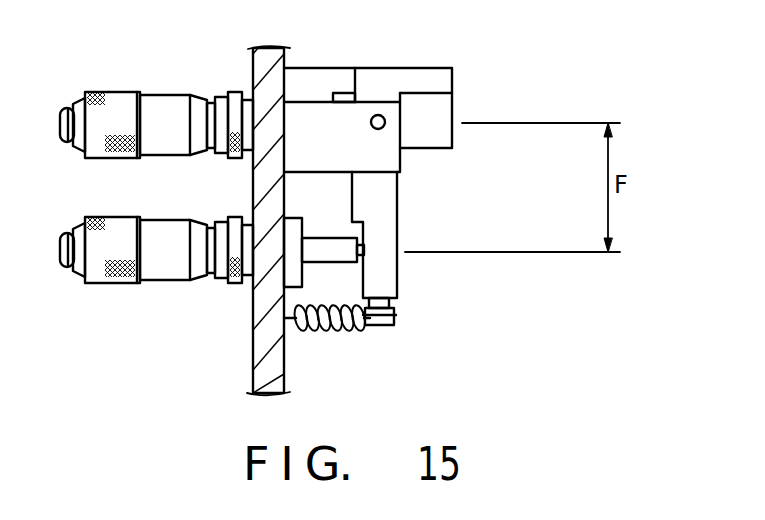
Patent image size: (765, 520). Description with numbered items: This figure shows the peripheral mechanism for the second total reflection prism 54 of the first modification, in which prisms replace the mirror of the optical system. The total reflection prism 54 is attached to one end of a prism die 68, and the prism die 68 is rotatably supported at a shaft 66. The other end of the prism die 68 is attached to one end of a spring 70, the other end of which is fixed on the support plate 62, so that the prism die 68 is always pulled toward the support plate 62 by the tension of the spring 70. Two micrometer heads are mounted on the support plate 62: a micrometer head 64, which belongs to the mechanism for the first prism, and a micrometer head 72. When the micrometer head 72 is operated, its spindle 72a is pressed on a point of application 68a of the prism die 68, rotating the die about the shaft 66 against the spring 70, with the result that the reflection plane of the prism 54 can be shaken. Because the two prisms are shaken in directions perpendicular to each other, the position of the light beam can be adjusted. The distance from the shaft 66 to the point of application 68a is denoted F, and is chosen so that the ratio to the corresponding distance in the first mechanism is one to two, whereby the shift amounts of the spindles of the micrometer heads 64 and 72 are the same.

The total reflection prism 54 is at (452, 113).
The support plate 62 is at (260, 357).
The micrometer head 64 is at (140, 92).
The shaft 66 is at (378, 129).
The prism die 68 is at (390, 238).
The point of application 68a is at (364, 251).
The spring 70 is at (338, 331).
The micrometer head 72 is at (128, 284).
The spindle 72a is at (327, 248).